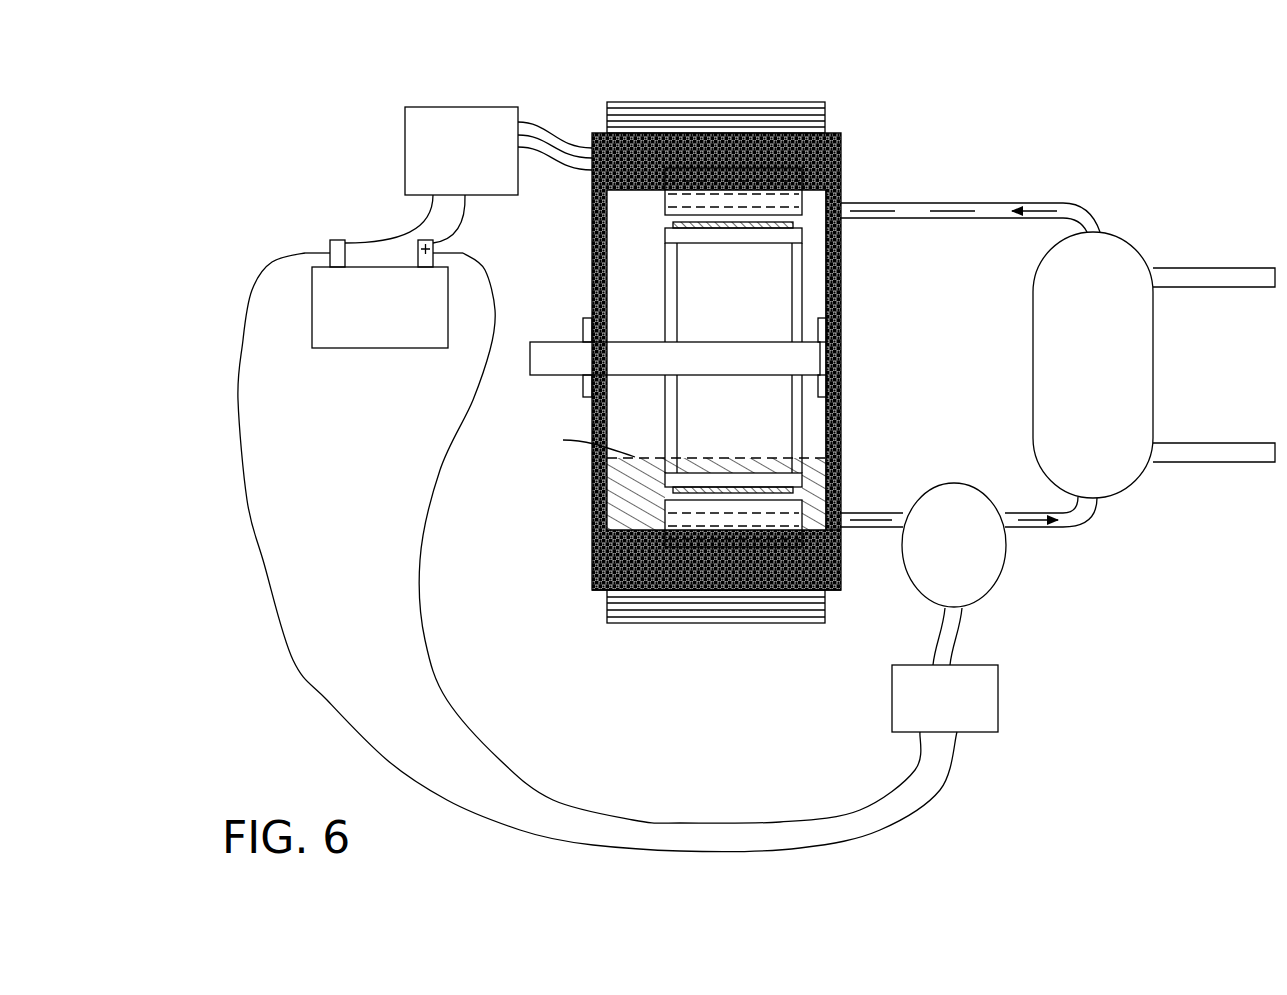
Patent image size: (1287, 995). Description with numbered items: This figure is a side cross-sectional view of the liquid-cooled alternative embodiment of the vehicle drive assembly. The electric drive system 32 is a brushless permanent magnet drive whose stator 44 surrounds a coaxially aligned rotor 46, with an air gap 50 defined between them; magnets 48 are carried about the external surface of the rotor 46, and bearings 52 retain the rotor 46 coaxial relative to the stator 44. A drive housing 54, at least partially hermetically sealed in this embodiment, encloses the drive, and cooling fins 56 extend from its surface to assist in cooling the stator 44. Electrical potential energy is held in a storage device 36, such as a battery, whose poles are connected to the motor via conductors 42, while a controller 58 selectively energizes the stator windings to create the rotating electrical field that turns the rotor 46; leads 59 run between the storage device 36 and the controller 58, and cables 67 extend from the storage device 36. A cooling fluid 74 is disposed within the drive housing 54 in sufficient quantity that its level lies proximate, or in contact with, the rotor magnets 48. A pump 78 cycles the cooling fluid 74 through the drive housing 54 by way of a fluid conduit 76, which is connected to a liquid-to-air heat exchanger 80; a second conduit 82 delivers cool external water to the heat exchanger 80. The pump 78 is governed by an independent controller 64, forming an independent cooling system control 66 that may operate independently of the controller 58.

The electric drive system 32 is at (590, 538).
The storage device 36 is at (372, 348).
The conductors 42 is at (528, 122).
The stator 44 is at (736, 192).
The rotor 46 is at (843, 431).
The magnets 48 is at (673, 225).
The air gap 50 is at (843, 265).
The bearings 52 is at (583, 330).
The drive housing 54 is at (843, 575).
The cooling fins 56 is at (656, 112).
The controller 58 is at (461, 151).
The power cables 59 is at (407, 232).
The independent controller 64 is at (938, 632).
The independent cooling system control 66 is at (998, 688).
The cables 67 is at (450, 705).
The cooling fluid 74 is at (623, 492).
The fluid conduit 76 is at (983, 220).
The pump 78 is at (954, 545).
The heat exchanger 80 is at (1093, 365).
The second conduit 82 is at (1208, 268).